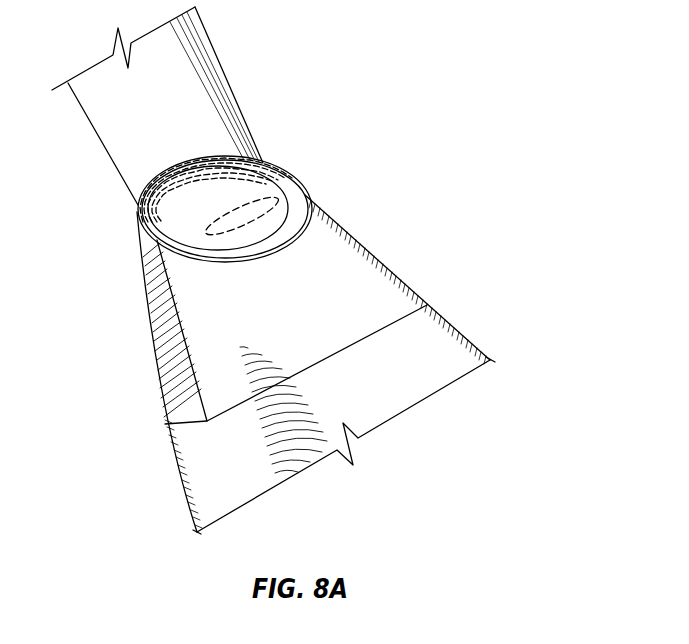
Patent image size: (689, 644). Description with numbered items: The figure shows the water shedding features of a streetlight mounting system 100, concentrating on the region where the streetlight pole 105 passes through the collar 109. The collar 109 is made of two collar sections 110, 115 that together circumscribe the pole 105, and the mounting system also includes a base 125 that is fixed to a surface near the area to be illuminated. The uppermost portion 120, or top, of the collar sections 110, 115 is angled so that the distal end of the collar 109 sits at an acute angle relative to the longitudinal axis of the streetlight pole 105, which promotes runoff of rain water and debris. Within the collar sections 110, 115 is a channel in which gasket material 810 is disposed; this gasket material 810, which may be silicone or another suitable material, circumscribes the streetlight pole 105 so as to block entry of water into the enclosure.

The streetlight mounting system 100 is at (415, 60).
The streetlight pole 105 is at (113, 123).
The collar 109 is at (360, 228).
The collar section 110 is at (357, 298).
The collar section 115 is at (155, 313).
The uppermost portion 120 is at (304, 194).
The base 125 is at (210, 480).
The gasket material 810 is at (230, 150).